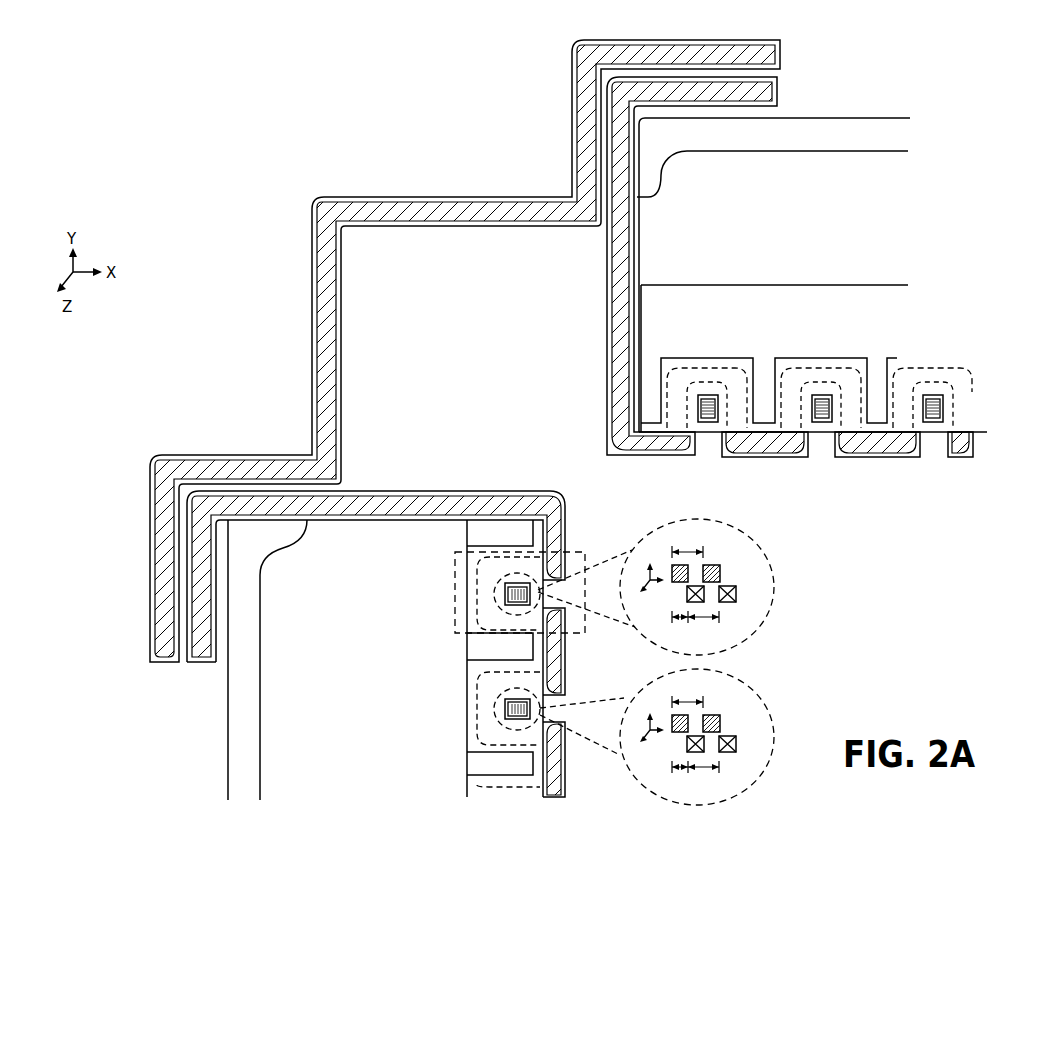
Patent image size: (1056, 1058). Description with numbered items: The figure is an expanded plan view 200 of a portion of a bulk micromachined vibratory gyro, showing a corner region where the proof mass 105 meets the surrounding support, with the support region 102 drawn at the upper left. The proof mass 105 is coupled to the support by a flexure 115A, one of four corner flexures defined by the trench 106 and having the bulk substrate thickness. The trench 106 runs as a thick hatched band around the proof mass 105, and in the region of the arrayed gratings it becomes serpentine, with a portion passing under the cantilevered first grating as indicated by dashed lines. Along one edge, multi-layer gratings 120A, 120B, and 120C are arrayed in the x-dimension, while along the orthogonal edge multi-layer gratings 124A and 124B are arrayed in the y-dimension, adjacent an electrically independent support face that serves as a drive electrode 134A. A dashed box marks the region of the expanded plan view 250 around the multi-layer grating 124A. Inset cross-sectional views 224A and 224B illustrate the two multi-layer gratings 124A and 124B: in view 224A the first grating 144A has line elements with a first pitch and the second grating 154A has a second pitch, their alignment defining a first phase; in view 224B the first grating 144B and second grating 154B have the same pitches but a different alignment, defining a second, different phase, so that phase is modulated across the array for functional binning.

The expanded plan view 200 is at (143, 160).
The first substrate 102 is at (233, 170).
The proof mass 105 is at (893, 628).
The trench 106 is at (414, 515).
The flexure 115A is at (468, 338).
The multi-layer grating 120A is at (706, 392).
The multi-layer grating 120B is at (820, 392).
The multi-layer grating 120C is at (933, 392).
The first multi-layer grating 124A is at (494, 590).
The second multi-layer grating 124B is at (494, 708).
The drive electrode 134A is at (345, 677).
The expanded plan view 250 is at (585, 552).
The cross-sectional view 224A is at (734, 579).
The cross-sectional view 224B is at (733, 730).
The first grating 144A is at (714, 568).
The second grating 154A is at (737, 594).
The first grating 144B is at (714, 718).
The second grating 154B is at (737, 744).